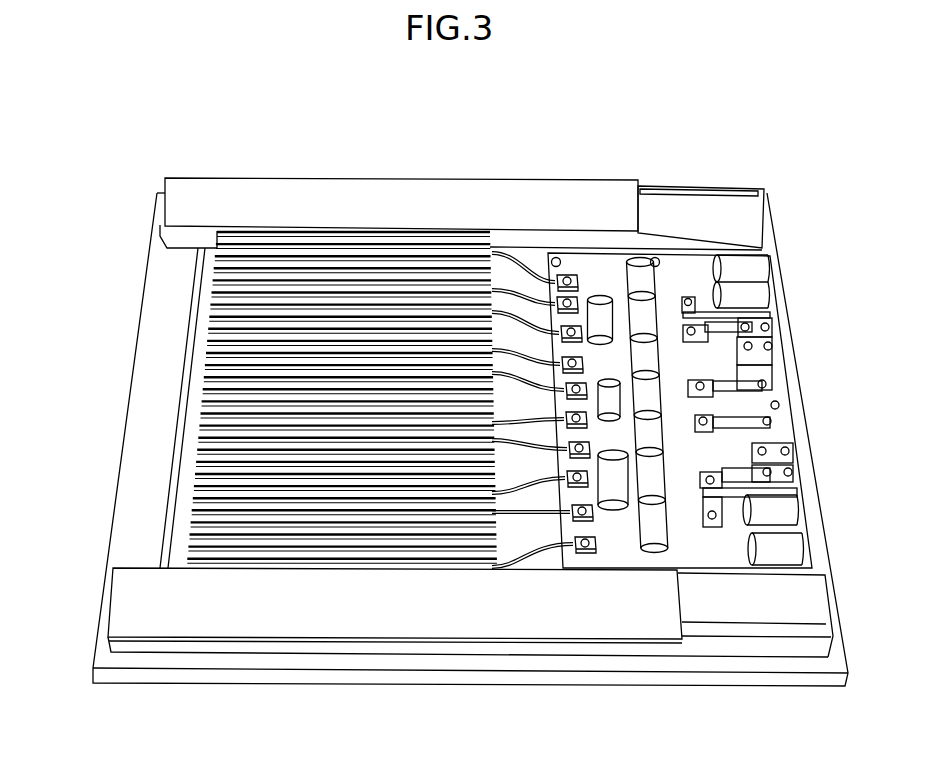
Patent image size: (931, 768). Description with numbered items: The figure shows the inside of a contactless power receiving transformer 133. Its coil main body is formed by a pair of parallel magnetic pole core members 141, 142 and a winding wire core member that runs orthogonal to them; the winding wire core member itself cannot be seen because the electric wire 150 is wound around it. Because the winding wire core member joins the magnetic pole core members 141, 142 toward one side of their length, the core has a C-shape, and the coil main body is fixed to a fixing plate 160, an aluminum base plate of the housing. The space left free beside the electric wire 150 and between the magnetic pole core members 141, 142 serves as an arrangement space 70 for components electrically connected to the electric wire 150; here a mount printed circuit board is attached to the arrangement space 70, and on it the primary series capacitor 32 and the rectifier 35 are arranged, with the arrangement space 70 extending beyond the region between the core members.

The power receiving transformer 133 is at (548, 134).
The magnetic pole core member 141 is at (298, 198).
The magnetic pole core member 142 is at (283, 618).
The electric wire 150 is at (232, 365).
The fixing plate 160 is at (797, 665).
The primary series capacitor 32 is at (636, 308).
The arrangement space 70 is at (700, 270).
The rectifier 35 is at (777, 321).